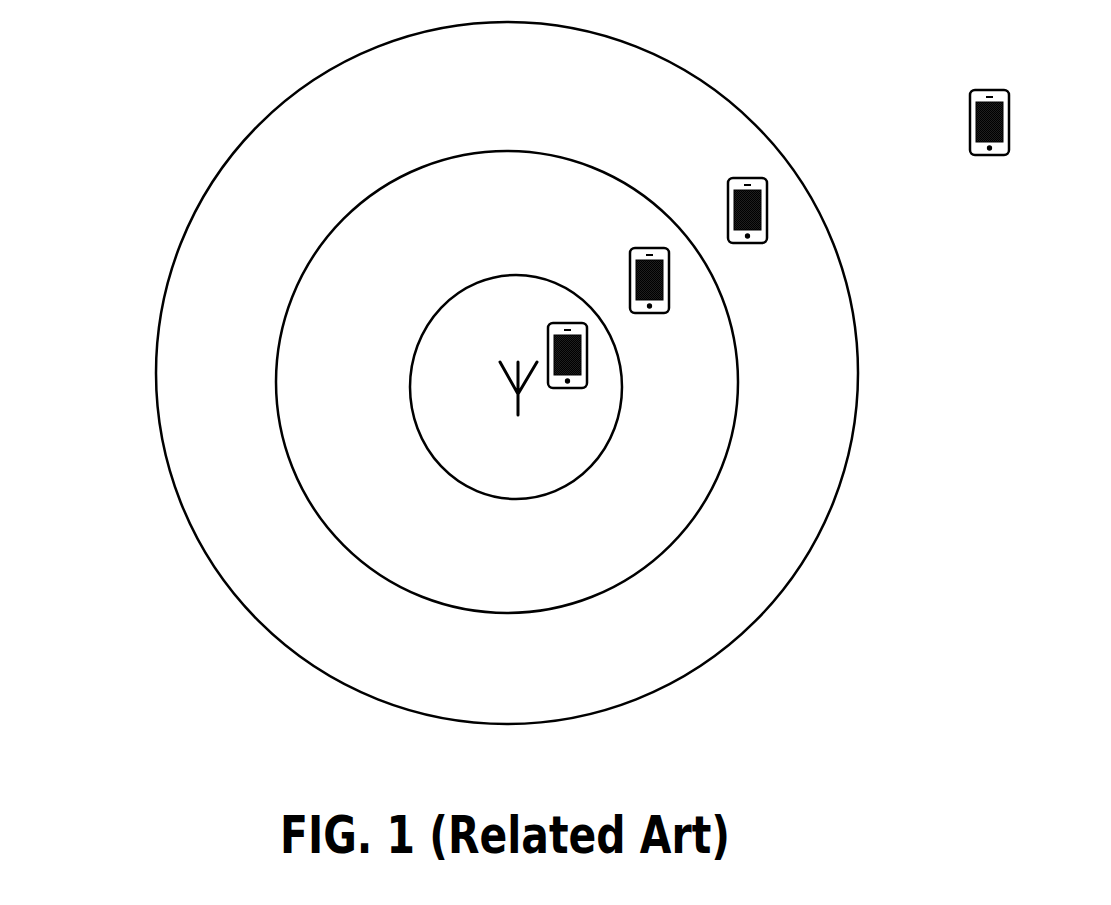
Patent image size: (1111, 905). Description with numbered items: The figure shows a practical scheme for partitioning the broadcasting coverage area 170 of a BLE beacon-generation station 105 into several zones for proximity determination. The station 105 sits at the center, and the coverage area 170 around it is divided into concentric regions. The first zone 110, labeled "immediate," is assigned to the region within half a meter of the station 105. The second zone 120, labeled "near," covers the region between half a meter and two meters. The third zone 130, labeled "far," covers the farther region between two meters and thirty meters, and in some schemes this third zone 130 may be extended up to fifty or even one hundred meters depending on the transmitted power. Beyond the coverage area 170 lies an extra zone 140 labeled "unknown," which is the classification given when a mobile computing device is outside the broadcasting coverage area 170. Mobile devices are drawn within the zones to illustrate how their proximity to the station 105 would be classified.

The BLE beacon-generation station 105 is at (515, 404).
The first zone 110 is at (542, 488).
The second zone 120 is at (544, 602).
The third zone 130 is at (548, 707).
The extra zone 140 is at (1090, 58).
The broadcasting coverage area 170 is at (185, 518).